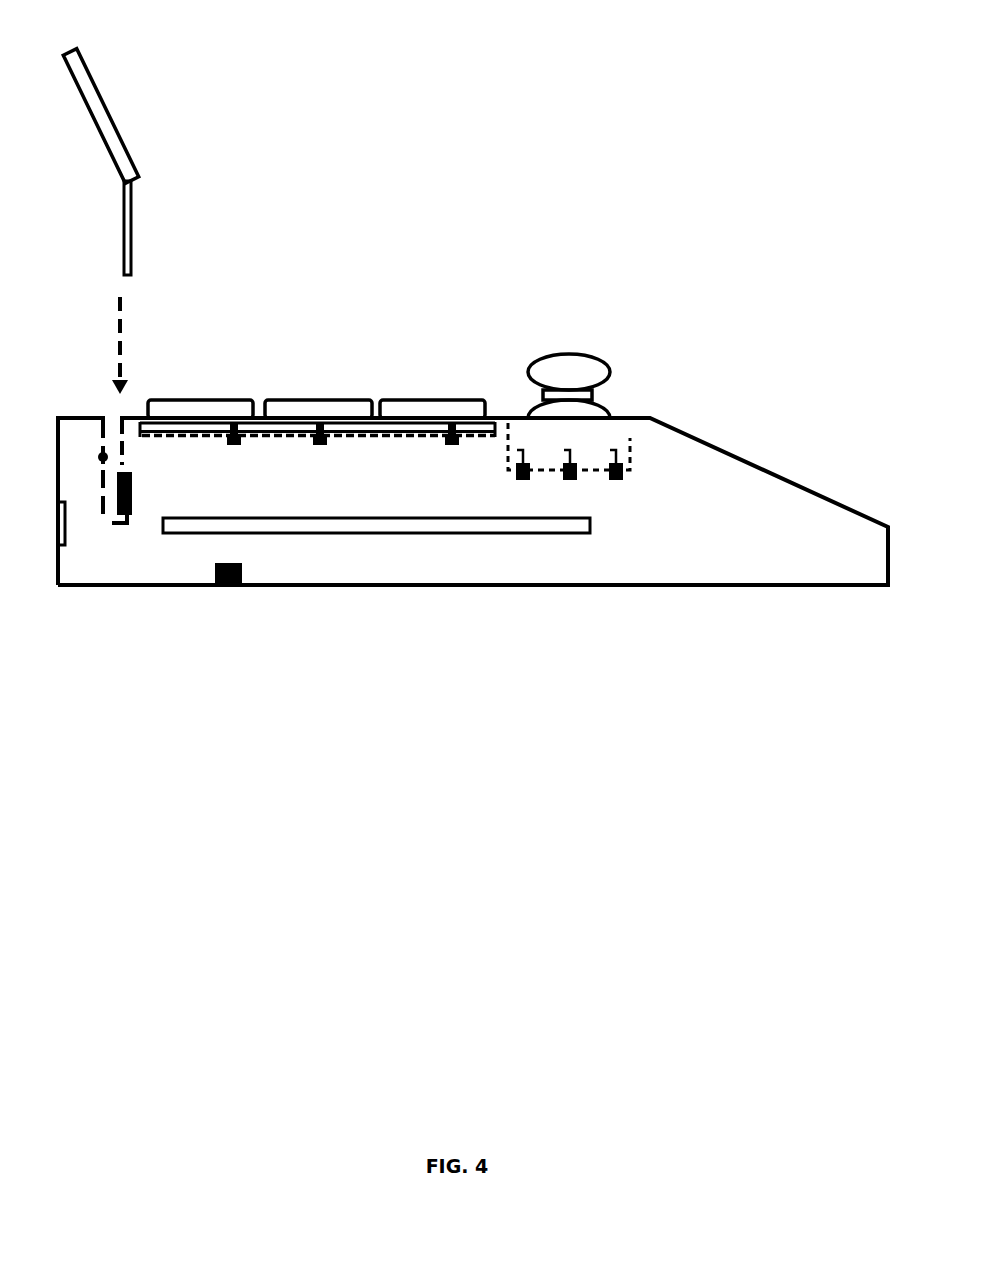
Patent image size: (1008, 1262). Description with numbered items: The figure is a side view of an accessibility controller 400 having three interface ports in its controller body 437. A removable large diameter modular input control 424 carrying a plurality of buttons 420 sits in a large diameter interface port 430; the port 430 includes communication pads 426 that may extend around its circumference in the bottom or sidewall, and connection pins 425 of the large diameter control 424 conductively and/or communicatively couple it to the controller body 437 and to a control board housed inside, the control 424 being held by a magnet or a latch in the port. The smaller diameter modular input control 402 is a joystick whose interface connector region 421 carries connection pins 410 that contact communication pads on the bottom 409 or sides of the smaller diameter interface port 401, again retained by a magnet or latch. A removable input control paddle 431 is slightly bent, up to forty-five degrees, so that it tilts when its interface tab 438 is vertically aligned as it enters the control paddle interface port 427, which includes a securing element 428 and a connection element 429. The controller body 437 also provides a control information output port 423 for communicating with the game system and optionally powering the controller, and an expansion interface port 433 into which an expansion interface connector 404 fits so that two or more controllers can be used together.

The controller 400 is at (364, 281).
The smaller diameter interface port 401 is at (635, 447).
The smaller diameter modular input control 402 is at (556, 353).
The expansion interface connector 404 is at (213, 573).
The bottom of the smaller diameter interface port 409 is at (513, 474).
The connection pins 410 is at (524, 458).
The buttons 420 is at (228, 398).
The interface connector region 421 is at (569, 445).
The control information output port 423 is at (68, 523).
The large diameter modular input control 424 is at (184, 426).
The connection pins 425 is at (444, 428).
The communication pads 426 is at (241, 444).
The control paddle interface port 427 is at (100, 519).
The securing element 428 is at (101, 453).
The connection element 429 is at (136, 496).
The large diameter interface port 430 is at (365, 441).
The removable input control paddle 431 is at (74, 50).
The expansion interface port 433 is at (249, 516).
The controller body 437 is at (72, 415).
The interface tab 438 is at (135, 240).